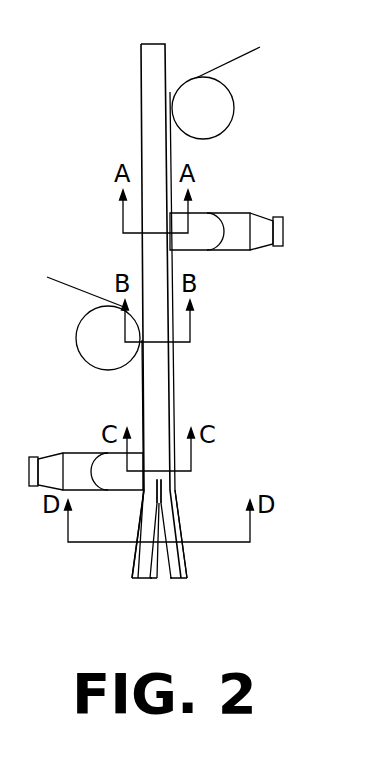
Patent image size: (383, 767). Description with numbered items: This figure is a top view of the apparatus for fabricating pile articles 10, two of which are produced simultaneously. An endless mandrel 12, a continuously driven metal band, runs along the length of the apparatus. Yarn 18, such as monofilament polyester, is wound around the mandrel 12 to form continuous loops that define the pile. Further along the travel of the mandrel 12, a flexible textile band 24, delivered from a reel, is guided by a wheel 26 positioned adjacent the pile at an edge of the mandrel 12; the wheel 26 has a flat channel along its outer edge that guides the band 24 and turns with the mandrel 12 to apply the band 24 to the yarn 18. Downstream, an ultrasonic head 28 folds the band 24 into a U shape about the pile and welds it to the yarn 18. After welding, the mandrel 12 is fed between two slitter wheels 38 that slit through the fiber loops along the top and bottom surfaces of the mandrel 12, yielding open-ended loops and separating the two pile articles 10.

The pile article 10 is at (140, 582).
The endless mandrel 12 is at (160, 582).
The yarn 18 is at (141, 104).
The flexible textile band 24 is at (227, 62).
The wheel 26 is at (210, 118).
The ultrasonic head 28 is at (230, 222).
The slitter wheels 38 is at (161, 488).